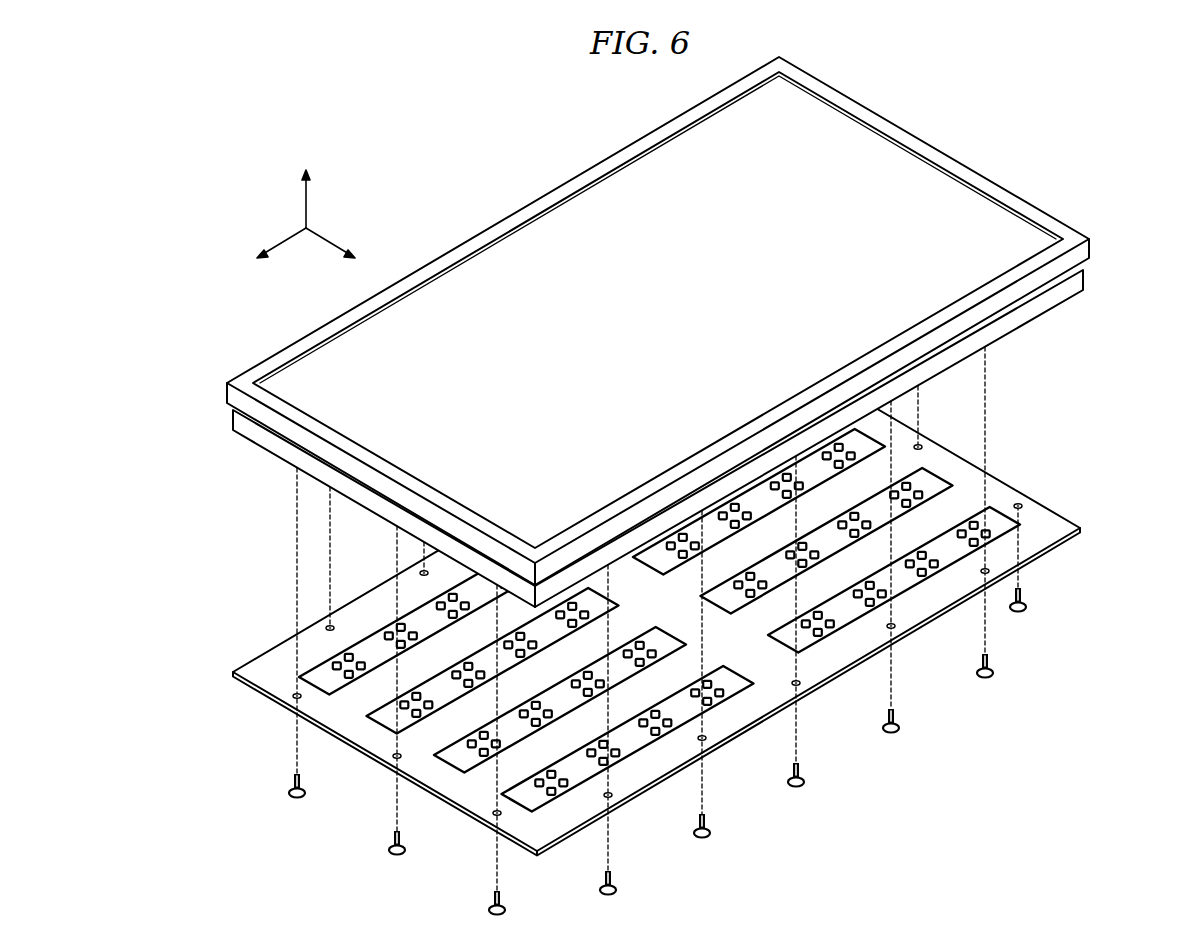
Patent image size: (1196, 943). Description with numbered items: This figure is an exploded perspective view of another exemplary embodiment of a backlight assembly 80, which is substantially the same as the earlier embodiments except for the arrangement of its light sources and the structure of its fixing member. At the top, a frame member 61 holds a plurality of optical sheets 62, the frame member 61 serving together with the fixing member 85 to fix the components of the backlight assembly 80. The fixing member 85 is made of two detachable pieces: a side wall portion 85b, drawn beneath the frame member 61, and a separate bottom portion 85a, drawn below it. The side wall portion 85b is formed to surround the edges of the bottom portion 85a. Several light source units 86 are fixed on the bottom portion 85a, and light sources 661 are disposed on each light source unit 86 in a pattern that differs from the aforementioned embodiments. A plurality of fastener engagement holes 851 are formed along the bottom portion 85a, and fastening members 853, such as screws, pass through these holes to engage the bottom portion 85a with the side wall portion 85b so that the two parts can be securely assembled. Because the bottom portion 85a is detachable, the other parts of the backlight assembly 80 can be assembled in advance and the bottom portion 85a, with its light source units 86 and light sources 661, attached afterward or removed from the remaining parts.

The backlight assembly 80 is at (506, 127).
The frame member 61 is at (1012, 192).
The optical sheets 62 is at (855, 142).
The fixing member 85 is at (713, 592).
The bottom portion 85a is at (1054, 512).
The side wall portion 85b is at (1000, 330).
The fastener engagement holes 851 is at (896, 628).
The fastening members 853 is at (897, 738).
The light source unit 86 is at (449, 778).
The light sources 661 is at (549, 794).